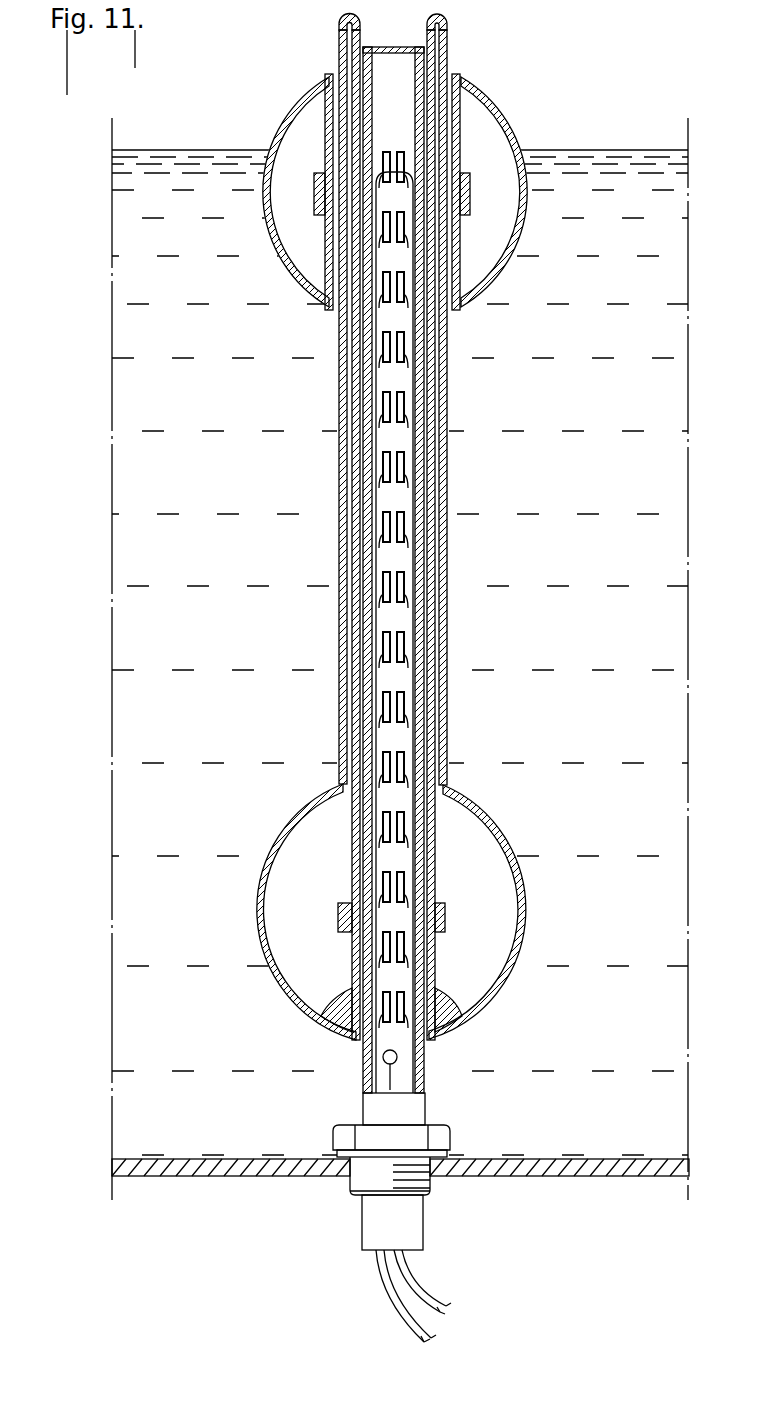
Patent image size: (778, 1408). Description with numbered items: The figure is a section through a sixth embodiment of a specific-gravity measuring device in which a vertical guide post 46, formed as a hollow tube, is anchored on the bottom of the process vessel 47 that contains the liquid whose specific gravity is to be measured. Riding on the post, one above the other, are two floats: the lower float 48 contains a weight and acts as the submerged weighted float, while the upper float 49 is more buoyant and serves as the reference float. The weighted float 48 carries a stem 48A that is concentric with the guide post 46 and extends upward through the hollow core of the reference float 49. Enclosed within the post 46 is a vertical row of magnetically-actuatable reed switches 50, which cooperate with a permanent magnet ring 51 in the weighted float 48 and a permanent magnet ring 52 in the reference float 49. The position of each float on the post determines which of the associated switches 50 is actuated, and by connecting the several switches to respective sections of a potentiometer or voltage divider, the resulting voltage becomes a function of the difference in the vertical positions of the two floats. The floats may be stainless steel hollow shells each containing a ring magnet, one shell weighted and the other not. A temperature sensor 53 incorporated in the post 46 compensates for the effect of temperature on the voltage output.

The vertical guide post 46 is at (428, 1072).
The process vessel 47 is at (543, 1159).
The submerged weighted float 48 is at (505, 987).
The stem 48A is at (447, 728).
The reference float 49 is at (483, 290).
The magnetically-actuatable reed switches 50 is at (398, 632).
The permanent magnet ring 51 is at (338, 912).
The permanent magnet ring 52 is at (316, 215).
The temperature sensor 53 is at (383, 1057).